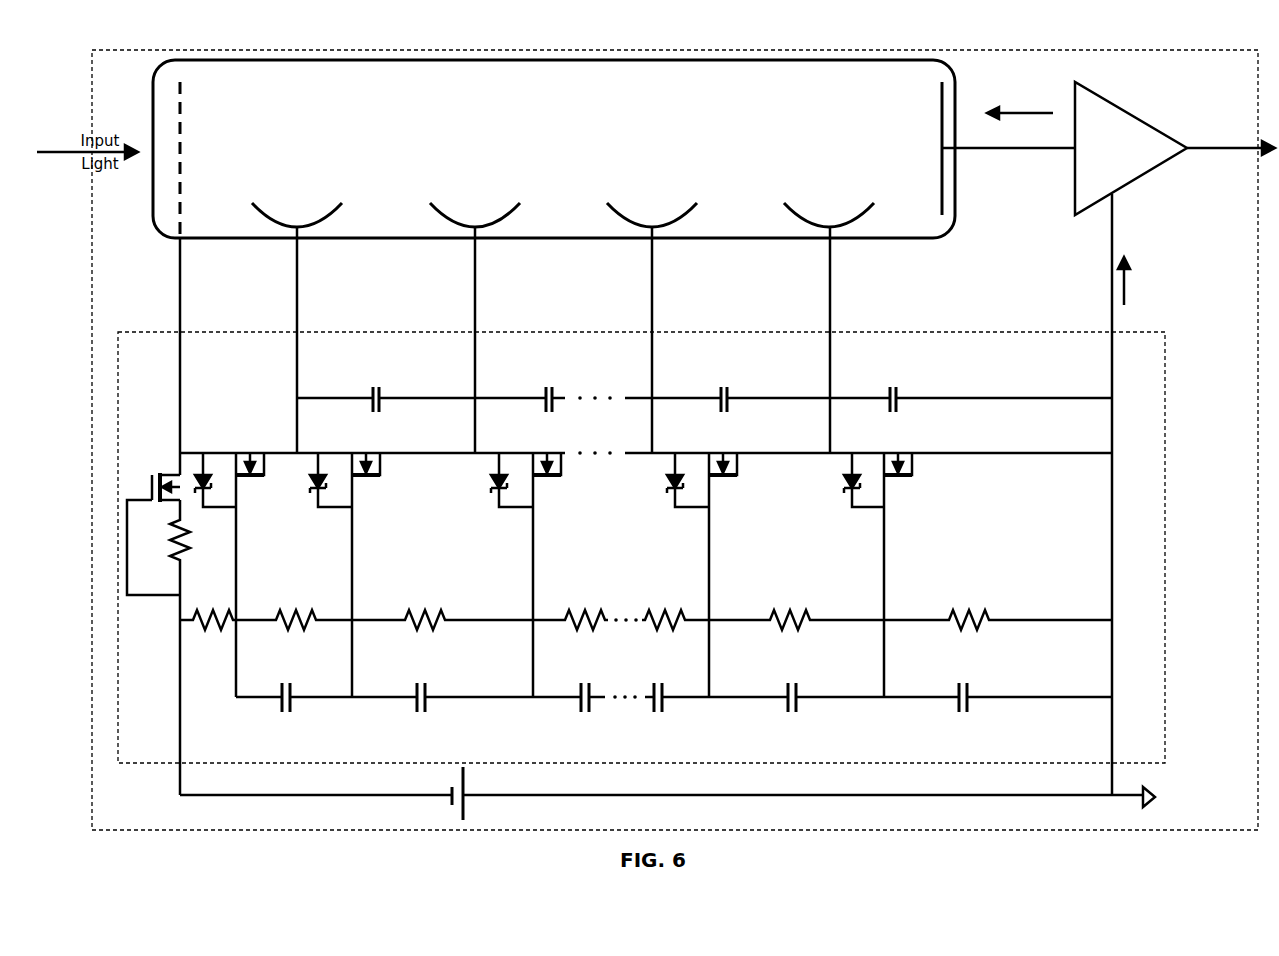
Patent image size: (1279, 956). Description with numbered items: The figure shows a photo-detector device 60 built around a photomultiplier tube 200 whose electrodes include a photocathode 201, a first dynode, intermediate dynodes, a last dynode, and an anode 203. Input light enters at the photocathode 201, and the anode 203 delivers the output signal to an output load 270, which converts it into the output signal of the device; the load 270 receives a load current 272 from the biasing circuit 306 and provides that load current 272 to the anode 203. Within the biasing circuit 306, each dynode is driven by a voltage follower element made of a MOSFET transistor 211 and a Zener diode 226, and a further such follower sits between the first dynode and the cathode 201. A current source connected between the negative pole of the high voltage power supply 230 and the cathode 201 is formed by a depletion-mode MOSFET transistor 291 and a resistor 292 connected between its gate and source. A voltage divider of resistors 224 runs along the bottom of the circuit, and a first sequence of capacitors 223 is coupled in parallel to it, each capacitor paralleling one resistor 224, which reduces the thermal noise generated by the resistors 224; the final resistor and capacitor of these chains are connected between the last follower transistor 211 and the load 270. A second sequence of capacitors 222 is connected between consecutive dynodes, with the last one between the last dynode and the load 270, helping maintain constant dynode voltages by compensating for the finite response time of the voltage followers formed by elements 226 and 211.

The photo-detector device 60 is at (595, 50).
The photomultiplier tube 200 is at (554, 149).
The photocathode 201 is at (180, 116).
The anode 203 is at (942, 172).
The MOSFET transistors 211 is at (588, 562).
The second sequence of capacitors 222 is at (659, 389).
The first sequence of capacitors 223 is at (631, 707).
The resistors of the voltage divider 224 is at (591, 645).
The Zener diodes 226 is at (539, 504).
The high voltage power supply 230 is at (645, 778).
The output load 270 is at (1175, 148).
The load current 272 is at (1083, 192).
The depletion-mode MOSFET transistor Qcs 291 is at (153, 514).
The resistor Rcs 292 is at (165, 552).
The biasing circuit 306 is at (1162, 545).